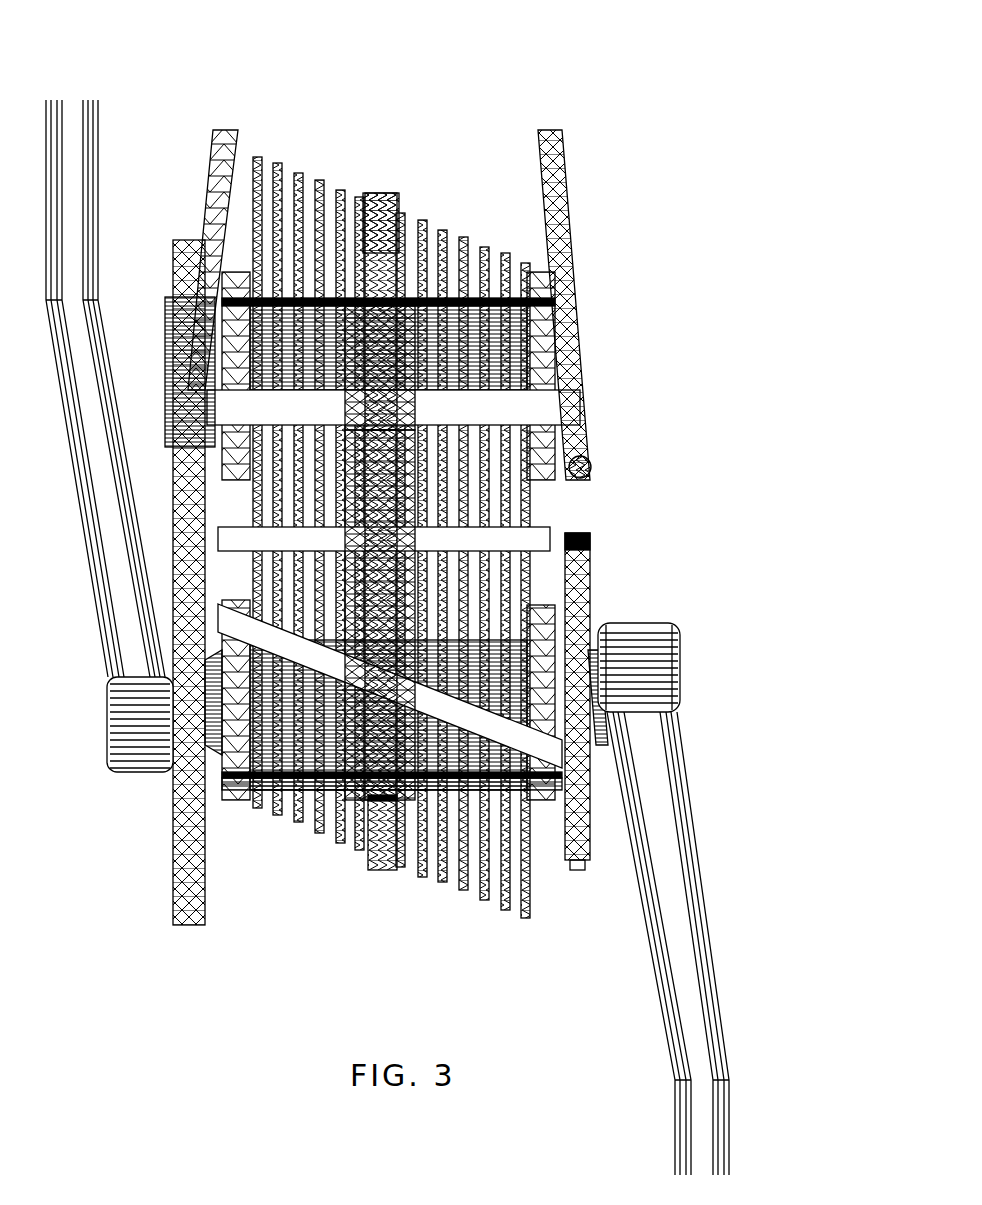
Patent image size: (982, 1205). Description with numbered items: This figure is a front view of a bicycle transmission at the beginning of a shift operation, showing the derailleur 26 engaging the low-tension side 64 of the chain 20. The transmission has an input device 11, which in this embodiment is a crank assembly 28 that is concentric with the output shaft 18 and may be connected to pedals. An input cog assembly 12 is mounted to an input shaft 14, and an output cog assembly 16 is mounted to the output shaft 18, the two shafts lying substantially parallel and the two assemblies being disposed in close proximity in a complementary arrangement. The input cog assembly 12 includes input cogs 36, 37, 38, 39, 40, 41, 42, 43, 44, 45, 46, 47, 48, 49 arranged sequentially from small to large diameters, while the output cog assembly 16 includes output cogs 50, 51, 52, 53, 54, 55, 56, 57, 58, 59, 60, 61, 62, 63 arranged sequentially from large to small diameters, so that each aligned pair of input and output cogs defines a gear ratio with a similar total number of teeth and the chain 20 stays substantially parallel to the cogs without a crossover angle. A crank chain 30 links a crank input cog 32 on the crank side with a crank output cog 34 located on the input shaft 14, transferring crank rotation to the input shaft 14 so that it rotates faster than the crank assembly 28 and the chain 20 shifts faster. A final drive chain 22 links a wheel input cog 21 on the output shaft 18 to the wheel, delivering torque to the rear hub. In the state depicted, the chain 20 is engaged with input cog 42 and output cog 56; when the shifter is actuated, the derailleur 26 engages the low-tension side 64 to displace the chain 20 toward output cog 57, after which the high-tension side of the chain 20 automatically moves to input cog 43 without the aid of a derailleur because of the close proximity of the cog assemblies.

The input device 11 is at (708, 689).
The input cog assembly 12 is at (315, 112).
The input shaft 14 is at (540, 360).
The output cog assembly 16 is at (310, 868).
The output shaft 18 is at (603, 628).
The chain 20 is at (380, 192).
The wheel input cog 21 is at (600, 748).
The final drive chain 22 is at (592, 588).
The derailleur 26 is at (560, 532).
The crank assembly 28 is at (686, 812).
The crank chain 30 is at (175, 618).
The crank input cog 32 is at (170, 767).
The crank output cog 34 is at (175, 300).
The input cog 36 is at (255, 157).
The input cog 37 is at (277, 163).
The input cog 38 is at (298, 173).
The input cog 39 is at (319, 180).
The input cog 40 is at (340, 190).
The input cog 41 is at (359, 197).
The input cog 42 is at (378, 193).
The input cog 43 is at (400, 213).
The input cog 44 is at (422, 220).
The input cog 45 is at (442, 230).
The input cog 46 is at (463, 237).
The input cog 47 is at (484, 247).
The input cog 48 is at (505, 253).
The input cog 49 is at (525, 263).
The output cog 50 is at (258, 808).
The output cog 51 is at (278, 815).
The output cog 52 is at (299, 822).
The output cog 53 is at (320, 835).
The output cog 54 is at (341, 845).
The output cog 55 is at (360, 852).
The output cog 56 is at (382, 870).
The output cog 57 is at (401, 867).
The output cog 58 is at (423, 877).
The output cog 59 is at (443, 882).
The output cog 60 is at (464, 890).
The output cog 61 is at (485, 900).
The output cog 62 is at (506, 910).
The output cog 63 is at (526, 918).
The low-tension side 64 is at (400, 805).